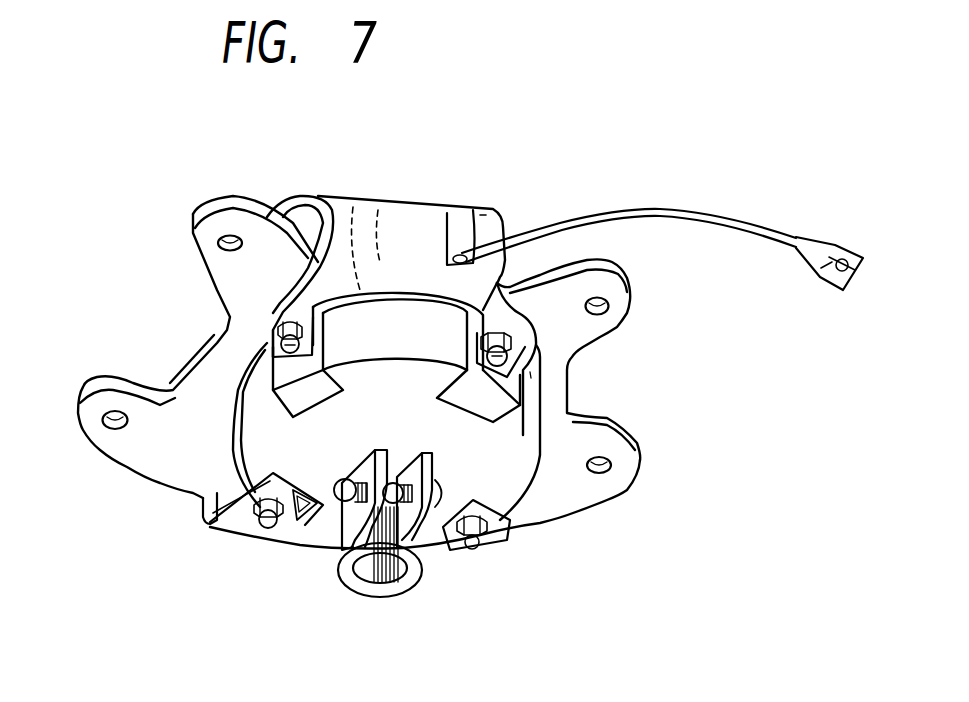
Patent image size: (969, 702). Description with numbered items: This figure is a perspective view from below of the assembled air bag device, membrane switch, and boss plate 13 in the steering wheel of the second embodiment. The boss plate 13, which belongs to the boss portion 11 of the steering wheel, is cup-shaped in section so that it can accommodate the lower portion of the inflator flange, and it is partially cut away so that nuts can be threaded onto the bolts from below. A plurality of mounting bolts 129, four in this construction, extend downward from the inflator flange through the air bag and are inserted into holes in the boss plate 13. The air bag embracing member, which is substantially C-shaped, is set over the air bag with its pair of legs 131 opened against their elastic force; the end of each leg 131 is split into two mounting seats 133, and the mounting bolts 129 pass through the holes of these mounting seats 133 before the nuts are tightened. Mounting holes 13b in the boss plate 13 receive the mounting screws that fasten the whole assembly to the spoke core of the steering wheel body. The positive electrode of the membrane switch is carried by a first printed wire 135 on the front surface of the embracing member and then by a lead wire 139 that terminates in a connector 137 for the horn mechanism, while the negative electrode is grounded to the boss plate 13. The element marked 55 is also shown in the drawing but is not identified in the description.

The boss portion 11 is at (413, 578).
The boss plate 13 is at (560, 507).
The mounting holes 13b is at (602, 308).
The clamp bolt 55 is at (440, 540).
The mounting bolts 129 is at (530, 380).
The legs 131 is at (400, 222).
The mounting seats 133 is at (284, 313).
The first printed wire 135 is at (457, 218).
The connector 137 is at (826, 290).
The lead wire 139 is at (735, 220).